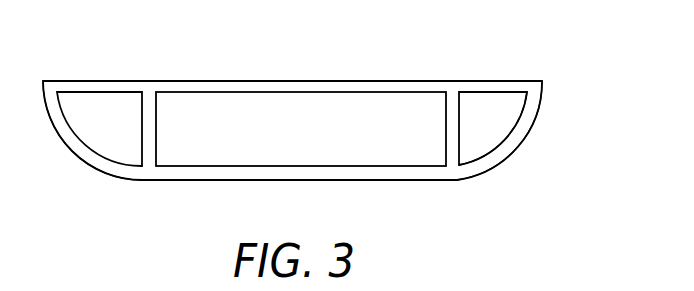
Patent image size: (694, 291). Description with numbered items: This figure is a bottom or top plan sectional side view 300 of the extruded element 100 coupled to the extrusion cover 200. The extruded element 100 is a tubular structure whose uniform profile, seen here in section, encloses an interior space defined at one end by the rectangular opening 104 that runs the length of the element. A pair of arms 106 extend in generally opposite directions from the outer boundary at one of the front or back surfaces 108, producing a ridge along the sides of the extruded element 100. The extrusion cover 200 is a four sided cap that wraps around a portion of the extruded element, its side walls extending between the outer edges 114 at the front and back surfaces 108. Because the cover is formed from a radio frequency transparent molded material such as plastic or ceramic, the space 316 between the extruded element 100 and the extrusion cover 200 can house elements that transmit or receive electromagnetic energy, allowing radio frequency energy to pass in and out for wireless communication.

The extruded element 100 is at (346, 81).
The rectangular opening 104 is at (209, 152).
The arms 106 is at (99, 81).
The front or back surfaces 108 is at (266, 81).
The outer edges 114 is at (540, 88).
The extrusion cover 200 is at (498, 158).
The plan sectional side view 300 is at (618, 45).
The space 316 is at (83, 128).